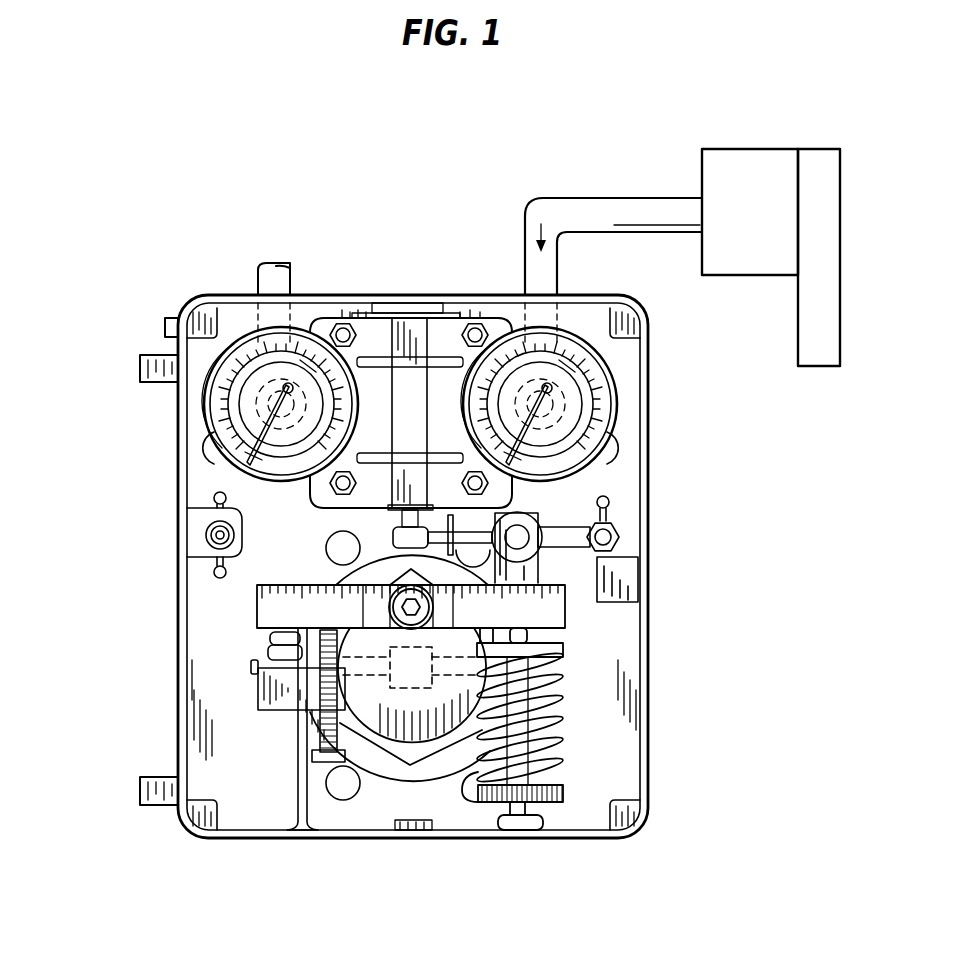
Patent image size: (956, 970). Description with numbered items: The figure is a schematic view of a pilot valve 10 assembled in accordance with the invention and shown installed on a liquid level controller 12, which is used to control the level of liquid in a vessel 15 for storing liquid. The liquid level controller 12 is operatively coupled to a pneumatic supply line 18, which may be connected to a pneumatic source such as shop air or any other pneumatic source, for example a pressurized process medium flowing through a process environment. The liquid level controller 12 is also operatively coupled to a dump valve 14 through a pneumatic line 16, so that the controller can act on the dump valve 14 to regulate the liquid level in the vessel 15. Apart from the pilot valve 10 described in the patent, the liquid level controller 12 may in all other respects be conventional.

The pilot valve 10 is at (400, 422).
The liquid level controller 12 is at (160, 525).
The dump valve 14 is at (738, 276).
The vessel 15 is at (817, 367).
The pneumatic line 16 is at (637, 236).
The pneumatic supply line 18 is at (257, 278).